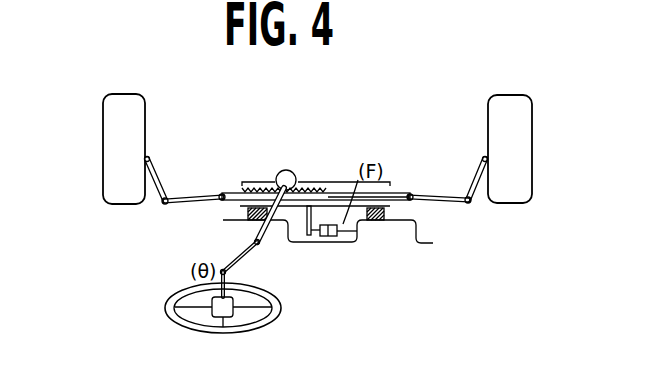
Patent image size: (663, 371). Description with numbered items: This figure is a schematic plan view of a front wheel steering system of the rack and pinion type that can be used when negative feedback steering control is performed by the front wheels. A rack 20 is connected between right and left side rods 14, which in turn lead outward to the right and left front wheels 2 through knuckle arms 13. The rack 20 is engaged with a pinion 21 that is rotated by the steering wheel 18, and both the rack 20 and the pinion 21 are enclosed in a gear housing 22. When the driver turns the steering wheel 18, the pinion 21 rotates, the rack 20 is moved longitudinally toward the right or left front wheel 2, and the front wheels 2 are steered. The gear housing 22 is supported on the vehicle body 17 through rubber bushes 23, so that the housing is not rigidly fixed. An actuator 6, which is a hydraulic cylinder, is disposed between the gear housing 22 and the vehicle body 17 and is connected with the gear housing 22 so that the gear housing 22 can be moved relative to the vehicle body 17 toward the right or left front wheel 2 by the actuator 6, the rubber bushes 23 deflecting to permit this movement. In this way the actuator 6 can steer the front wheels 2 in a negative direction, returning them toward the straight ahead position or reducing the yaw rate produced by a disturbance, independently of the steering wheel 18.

The front wheel 2 is at (103, 146).
The knuckle arm 13 is at (152, 194).
The side rod 14 is at (193, 194).
The rack 20 is at (398, 192).
The pinion 21 is at (283, 172).
The gear housing 22 is at (337, 183).
The rubber bush 23 is at (223, 221).
The vehicle body 17 is at (432, 243).
The actuator 6 is at (332, 237).
The steering wheel 18 is at (172, 317).